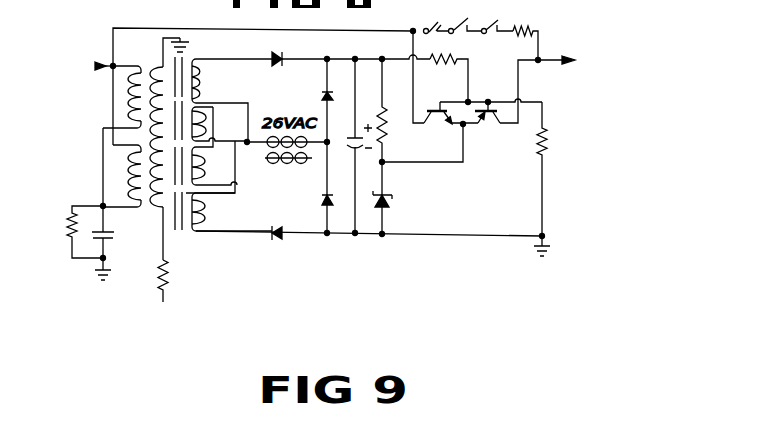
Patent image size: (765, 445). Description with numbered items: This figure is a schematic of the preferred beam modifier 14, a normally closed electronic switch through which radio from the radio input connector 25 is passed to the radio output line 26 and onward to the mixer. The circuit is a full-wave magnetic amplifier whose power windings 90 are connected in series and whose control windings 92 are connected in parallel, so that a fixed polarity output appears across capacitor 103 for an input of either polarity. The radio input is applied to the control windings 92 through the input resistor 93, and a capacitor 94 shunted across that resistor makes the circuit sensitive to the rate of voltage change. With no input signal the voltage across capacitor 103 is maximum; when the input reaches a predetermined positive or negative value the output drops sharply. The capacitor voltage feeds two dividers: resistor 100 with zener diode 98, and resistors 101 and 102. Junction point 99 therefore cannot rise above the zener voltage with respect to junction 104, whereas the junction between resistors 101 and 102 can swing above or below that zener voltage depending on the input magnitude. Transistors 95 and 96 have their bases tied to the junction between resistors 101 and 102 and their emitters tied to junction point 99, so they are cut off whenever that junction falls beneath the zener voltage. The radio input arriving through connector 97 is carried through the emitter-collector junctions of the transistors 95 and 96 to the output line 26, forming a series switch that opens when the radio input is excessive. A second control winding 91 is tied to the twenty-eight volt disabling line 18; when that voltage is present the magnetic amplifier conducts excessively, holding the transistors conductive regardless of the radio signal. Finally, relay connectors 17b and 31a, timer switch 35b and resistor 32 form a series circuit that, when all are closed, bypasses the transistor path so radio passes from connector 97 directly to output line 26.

The beam modifier 14 is at (446, 283).
The relay connector 17b is at (424, 18).
The disabling line connector 18 is at (164, 302).
The radio input connector 25 is at (97, 70).
The radio output line 26 is at (519, 81).
The relay connector 31a is at (477, 18).
The resistor 32 is at (534, 27).
The timer switch 35b is at (501, 40).
The power windings 90 is at (205, 89).
The second control winding 91 is at (147, 209).
The control windings 92 is at (112, 172).
The input resistor 93 is at (72, 241).
The capacitor 94 is at (113, 237).
The transistor 95 is at (436, 118).
The transistor 96 is at (490, 118).
The connector 97 is at (160, 28).
The zener diode 98 is at (390, 203).
The junction point 99 is at (384, 164).
The resistor 100 is at (383, 143).
The resistor 101 is at (450, 65).
The resistor 102 is at (547, 147).
The capacitor 103 is at (350, 137).
The junction 104 is at (383, 237).